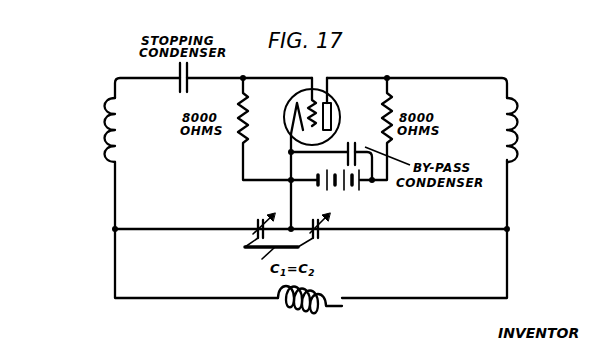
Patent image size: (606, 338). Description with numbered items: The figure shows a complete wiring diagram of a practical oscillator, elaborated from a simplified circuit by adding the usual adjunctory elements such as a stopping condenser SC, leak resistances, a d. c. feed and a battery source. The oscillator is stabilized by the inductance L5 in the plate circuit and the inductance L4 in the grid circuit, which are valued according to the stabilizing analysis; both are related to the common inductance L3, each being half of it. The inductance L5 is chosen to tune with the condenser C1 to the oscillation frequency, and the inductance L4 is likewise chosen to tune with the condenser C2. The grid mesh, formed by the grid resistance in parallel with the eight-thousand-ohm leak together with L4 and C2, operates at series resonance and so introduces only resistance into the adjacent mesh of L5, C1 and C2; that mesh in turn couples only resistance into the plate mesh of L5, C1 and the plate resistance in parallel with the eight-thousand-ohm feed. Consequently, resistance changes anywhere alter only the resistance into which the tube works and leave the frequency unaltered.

The inductance L3 is at (310, 310).
The inductance in the grid circuit L4 is at (88, 122).
The inductance in the plate circuit L5 is at (584, 122).
The condenser C1 is at (324, 234).
The condenser C2 is at (257, 222).
The stopping condenser SC is at (183, 77).